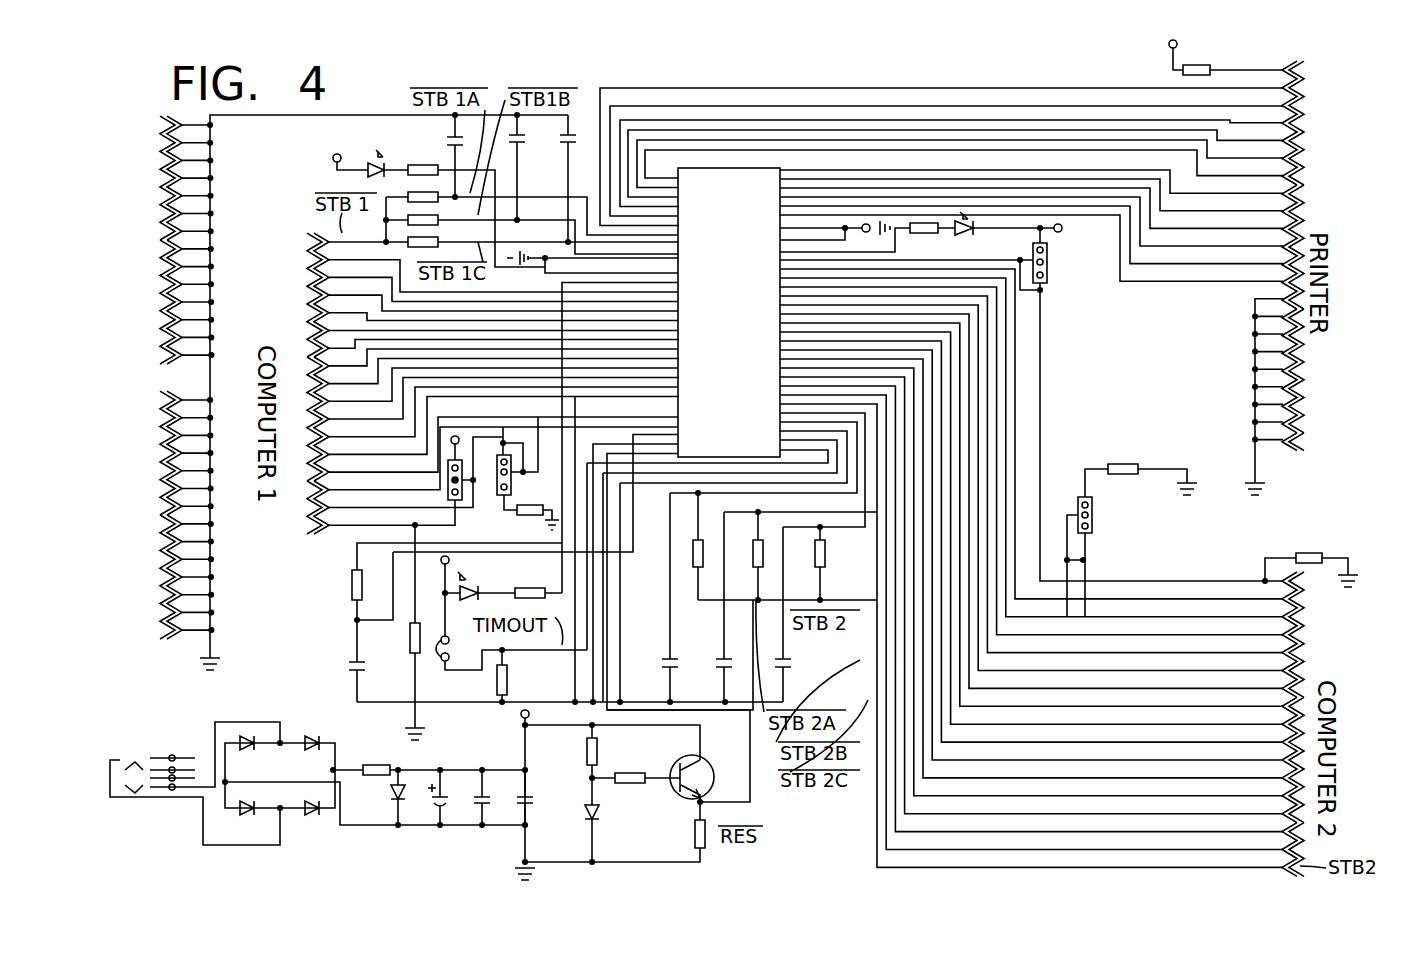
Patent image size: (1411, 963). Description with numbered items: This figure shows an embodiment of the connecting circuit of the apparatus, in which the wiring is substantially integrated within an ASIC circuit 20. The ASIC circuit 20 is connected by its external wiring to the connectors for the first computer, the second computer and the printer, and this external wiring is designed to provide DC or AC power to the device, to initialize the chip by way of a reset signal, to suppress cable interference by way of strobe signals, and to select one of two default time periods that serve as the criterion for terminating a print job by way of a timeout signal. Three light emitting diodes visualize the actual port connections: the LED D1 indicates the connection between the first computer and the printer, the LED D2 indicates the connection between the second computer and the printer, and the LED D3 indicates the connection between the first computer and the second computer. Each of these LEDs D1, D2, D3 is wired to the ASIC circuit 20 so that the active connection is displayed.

The ASIC circuit 20 is at (717, 374).
The LED D1 is at (358, 159).
The LED D2 is at (978, 228).
The LED D3 is at (470, 566).